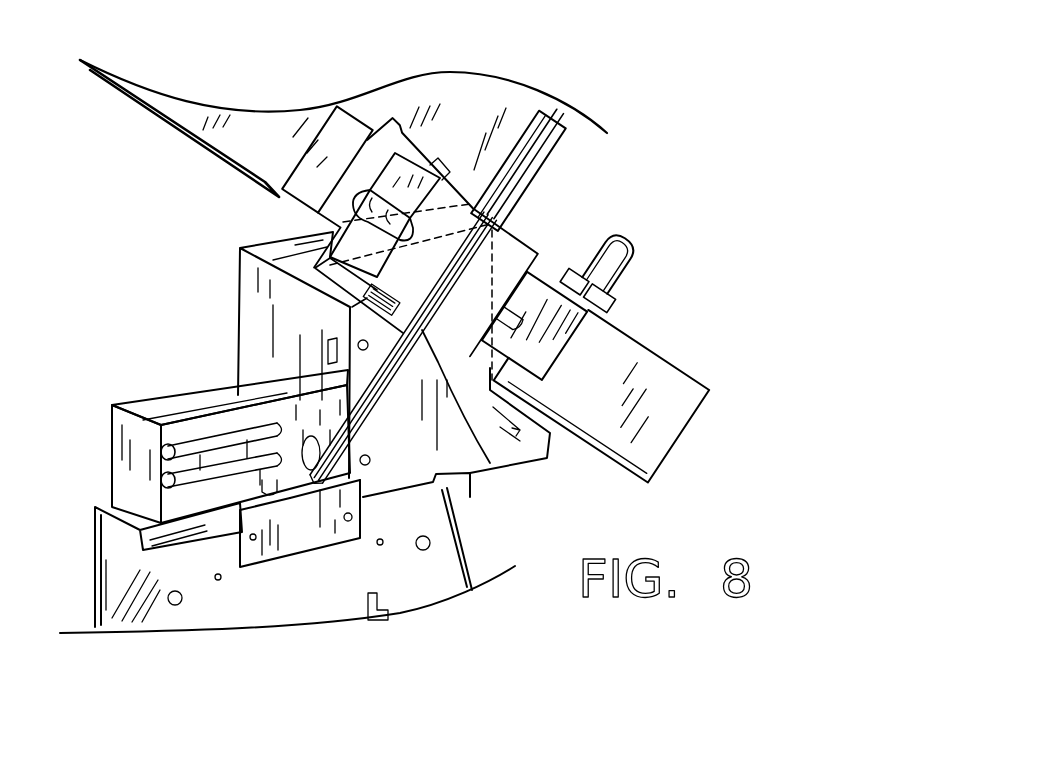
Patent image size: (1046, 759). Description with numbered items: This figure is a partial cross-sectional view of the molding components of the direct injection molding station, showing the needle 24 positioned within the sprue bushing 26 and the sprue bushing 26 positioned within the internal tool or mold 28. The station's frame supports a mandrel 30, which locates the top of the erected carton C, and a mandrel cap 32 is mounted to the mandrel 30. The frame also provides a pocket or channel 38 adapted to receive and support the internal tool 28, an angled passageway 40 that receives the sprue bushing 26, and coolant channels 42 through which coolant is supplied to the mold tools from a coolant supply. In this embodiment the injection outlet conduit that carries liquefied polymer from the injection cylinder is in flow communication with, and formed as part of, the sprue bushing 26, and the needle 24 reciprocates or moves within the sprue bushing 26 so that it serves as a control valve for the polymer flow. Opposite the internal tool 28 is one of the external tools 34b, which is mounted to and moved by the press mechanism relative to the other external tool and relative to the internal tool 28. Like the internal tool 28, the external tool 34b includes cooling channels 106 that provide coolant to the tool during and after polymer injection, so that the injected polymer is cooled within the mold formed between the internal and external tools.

The needle 24 is at (530, 188).
The sprue bushing 26 is at (557, 448).
The internal tool or mold 28 is at (215, 390).
The mandrel 30 is at (270, 492).
The mandrel cap 32 is at (150, 495).
The external tool 34b is at (280, 538).
The pocket or channel 38 is at (313, 523).
The angled passageway 40 is at (398, 382).
The coolant channels 42 is at (368, 464).
The cooling channels 106 is at (350, 521).
The carton C is at (127, 403).